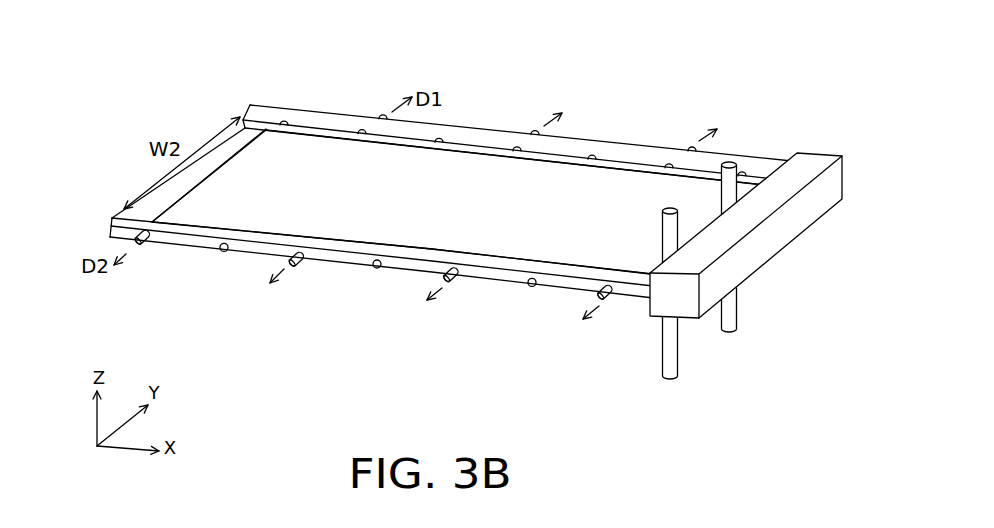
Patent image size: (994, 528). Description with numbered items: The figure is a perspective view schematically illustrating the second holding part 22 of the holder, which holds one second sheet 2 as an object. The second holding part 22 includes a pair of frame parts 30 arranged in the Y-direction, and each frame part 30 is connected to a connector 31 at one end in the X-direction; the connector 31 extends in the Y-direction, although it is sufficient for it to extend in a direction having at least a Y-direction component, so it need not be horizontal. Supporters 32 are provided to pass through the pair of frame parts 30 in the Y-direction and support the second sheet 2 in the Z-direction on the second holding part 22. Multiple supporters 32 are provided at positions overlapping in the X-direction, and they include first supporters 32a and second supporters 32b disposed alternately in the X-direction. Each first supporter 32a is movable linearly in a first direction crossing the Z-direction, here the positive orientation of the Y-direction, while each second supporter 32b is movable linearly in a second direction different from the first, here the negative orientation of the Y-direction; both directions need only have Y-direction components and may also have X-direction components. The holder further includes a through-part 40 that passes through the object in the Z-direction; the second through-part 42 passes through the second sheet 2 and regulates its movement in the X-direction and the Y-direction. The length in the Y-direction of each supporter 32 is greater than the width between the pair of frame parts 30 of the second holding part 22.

The second sheet 2 is at (600, 180).
The second holding part 22 is at (498, 219).
The frame part 30 is at (460, 130).
The connector 31 is at (800, 168).
The supporter 32 is at (423, 225).
The first supporter 32a is at (381, 114).
The second supporter 32b is at (143, 244).
The through-part 40 is at (780, 270).
The second through-part 42 is at (731, 186).